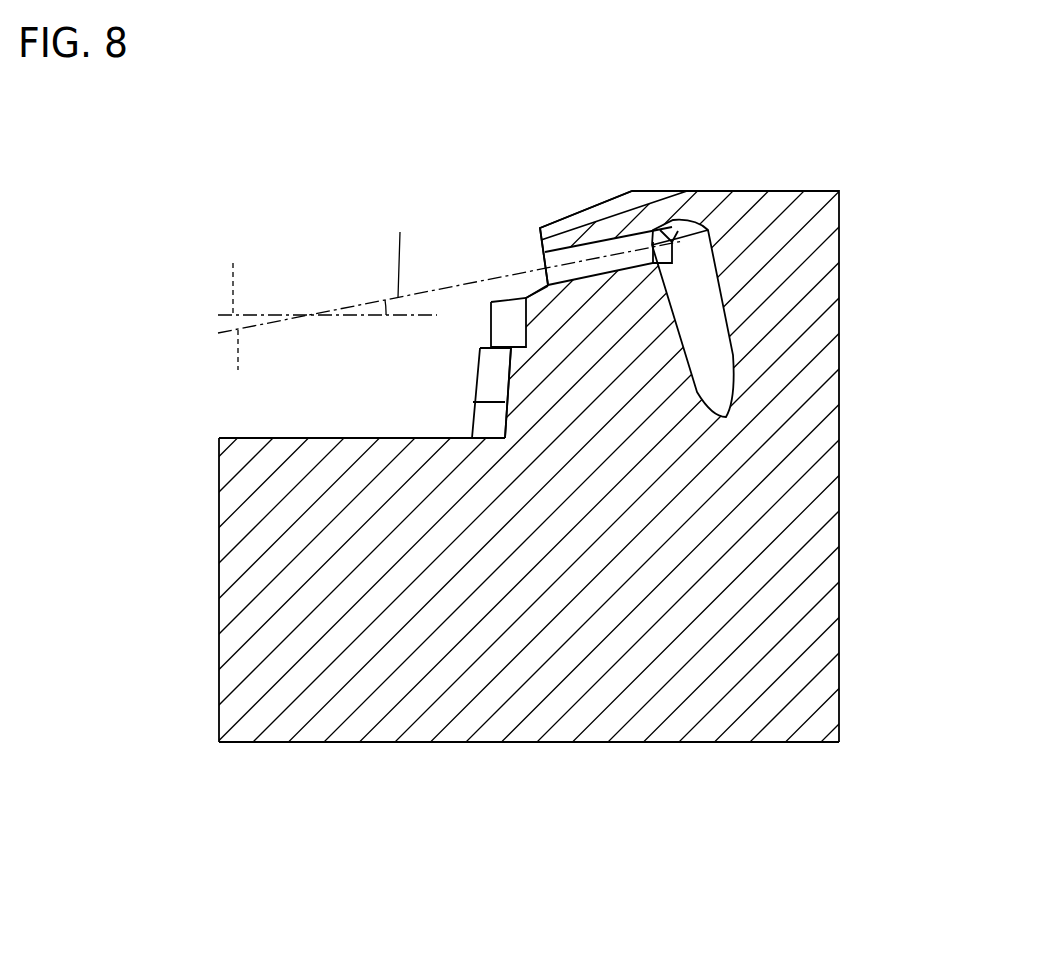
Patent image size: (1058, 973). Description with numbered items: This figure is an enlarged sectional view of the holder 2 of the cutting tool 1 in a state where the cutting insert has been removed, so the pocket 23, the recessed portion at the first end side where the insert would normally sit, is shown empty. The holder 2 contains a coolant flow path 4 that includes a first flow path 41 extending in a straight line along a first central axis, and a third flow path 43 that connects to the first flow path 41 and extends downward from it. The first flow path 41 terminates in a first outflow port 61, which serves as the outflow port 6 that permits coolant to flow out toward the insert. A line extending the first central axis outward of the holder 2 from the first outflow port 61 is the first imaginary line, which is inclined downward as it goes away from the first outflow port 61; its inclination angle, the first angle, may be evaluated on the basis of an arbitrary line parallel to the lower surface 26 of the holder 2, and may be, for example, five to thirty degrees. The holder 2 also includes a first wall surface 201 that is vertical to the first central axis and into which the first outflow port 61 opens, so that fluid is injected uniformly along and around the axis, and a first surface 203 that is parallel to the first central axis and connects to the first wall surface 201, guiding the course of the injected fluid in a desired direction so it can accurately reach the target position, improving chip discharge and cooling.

The cutting tool 1 is at (887, 142).
The holder 2 is at (749, 186).
The flow path 4 is at (734, 271).
The outflow port 6 is at (537, 271).
The pocket 23 is at (345, 437).
The lower surface 26 is at (527, 743).
The first flow path 41 is at (620, 238).
The third flow path 43 is at (700, 313).
The first outflow port 61 is at (572, 252).
The first wall surface 201 is at (541, 258).
The first surface 203 is at (522, 297).